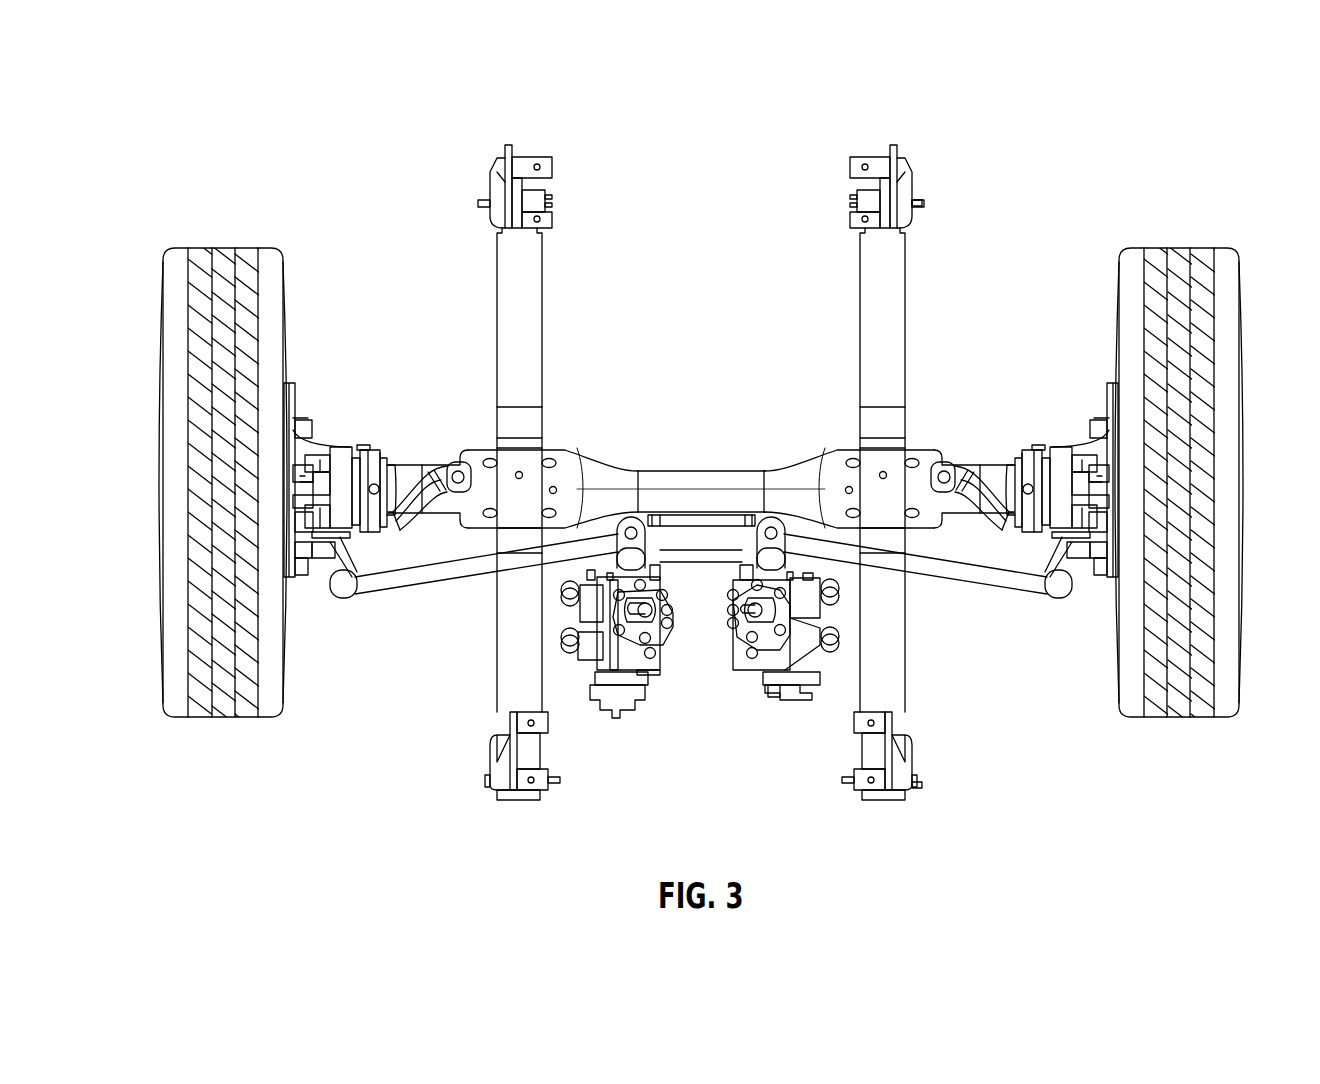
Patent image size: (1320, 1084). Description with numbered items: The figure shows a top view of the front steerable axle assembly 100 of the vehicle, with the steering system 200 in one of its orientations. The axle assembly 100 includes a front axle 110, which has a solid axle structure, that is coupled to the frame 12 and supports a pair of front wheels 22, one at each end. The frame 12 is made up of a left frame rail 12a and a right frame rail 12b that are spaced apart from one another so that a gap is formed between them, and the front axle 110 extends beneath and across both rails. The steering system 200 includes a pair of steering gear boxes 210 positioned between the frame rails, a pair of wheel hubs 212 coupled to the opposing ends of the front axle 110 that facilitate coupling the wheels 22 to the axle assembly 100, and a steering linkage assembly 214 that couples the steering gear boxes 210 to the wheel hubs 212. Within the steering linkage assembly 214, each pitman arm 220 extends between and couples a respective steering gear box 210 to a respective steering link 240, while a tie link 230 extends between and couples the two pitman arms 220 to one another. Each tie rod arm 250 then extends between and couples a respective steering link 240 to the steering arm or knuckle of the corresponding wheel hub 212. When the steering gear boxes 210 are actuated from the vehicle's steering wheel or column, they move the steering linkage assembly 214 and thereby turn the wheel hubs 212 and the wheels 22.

The axle assembly 100 is at (320, 218).
The frame 12 is at (683, 442).
The left frame rail 12a is at (540, 157).
The right frame rail 12b is at (870, 157).
The wheels 22 is at (222, 248).
The front axle 110 is at (700, 480).
The steering system 200 is at (702, 598).
The steering gear boxes 210 is at (578, 626).
The wheel hubs 212 is at (368, 450).
The steering linkage assembly 214 is at (348, 624).
The pitman arms 220 is at (630, 525).
The tie link 230 is at (682, 565).
The steering links 240 is at (420, 586).
The tie rod arms 250 is at (327, 573).